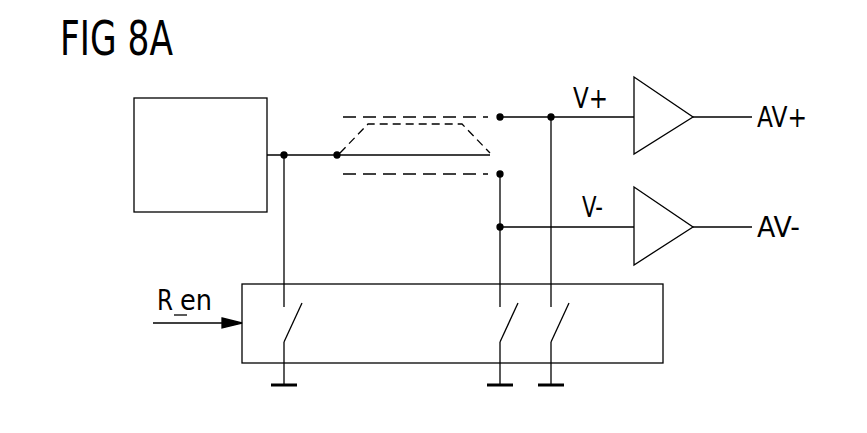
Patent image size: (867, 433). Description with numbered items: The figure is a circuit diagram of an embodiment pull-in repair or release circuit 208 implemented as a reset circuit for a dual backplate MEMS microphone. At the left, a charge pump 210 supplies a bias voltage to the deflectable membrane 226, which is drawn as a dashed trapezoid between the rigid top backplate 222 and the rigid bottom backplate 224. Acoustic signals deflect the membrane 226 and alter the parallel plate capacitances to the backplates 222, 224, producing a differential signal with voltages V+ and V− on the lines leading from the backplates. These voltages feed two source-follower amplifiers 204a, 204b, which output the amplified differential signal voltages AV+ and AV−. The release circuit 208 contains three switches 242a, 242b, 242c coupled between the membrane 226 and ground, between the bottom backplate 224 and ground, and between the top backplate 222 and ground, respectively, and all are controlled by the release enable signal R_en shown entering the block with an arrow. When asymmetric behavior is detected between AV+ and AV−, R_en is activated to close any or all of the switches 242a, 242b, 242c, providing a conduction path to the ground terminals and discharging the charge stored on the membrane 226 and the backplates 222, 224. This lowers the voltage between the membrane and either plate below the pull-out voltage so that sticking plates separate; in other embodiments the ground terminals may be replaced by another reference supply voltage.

The charge pump 210 is at (134, 153).
The top backplate 222 is at (415, 115).
The bottom backplate 224 is at (415, 178).
The membrane 226 is at (348, 157).
The amplifier 204a is at (660, 95).
The amplifier 204b is at (660, 205).
The release circuit 208 is at (663, 323).
The switch 242a is at (302, 323).
The switch 242b is at (504, 322).
The switch 242c is at (564, 323).